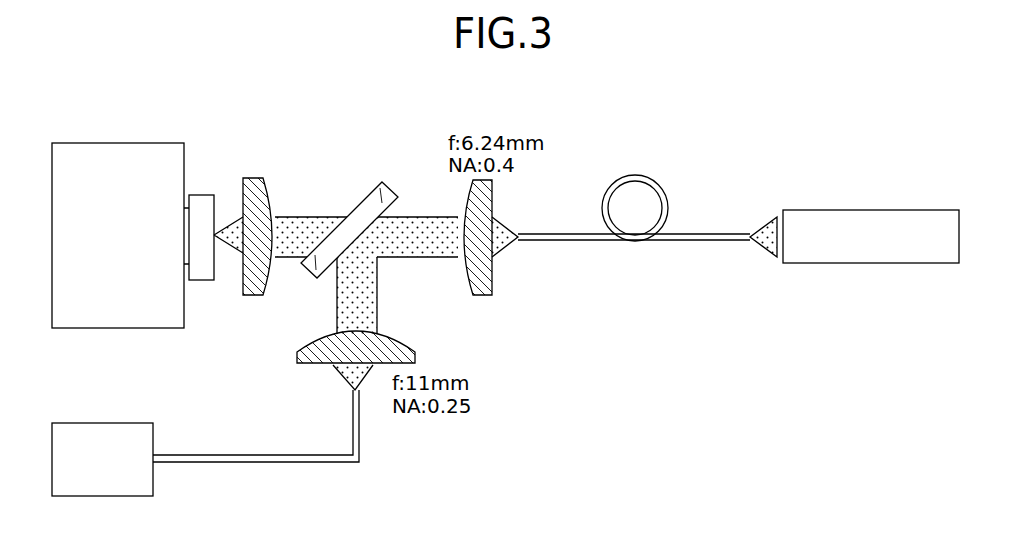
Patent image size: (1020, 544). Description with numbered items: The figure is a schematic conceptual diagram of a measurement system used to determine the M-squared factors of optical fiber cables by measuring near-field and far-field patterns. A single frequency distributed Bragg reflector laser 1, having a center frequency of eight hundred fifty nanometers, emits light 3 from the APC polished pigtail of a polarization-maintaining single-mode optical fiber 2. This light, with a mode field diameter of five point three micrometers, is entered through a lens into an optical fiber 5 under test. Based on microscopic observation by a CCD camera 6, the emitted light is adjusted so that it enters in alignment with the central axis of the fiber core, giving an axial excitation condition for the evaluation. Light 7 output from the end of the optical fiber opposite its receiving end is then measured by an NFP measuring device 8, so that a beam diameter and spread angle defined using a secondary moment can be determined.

The single frequency distributed Bragg reflector (DBR) laser 1 is at (83, 423).
The polarization-maintaining single-mode optical fiber 2 is at (213, 454).
The light 3 is at (415, 258).
The optical fiber 5 is at (692, 233).
The CCD camera 6 is at (153, 143).
The light 7 is at (763, 218).
The NFP measuring device 8 is at (873, 210).